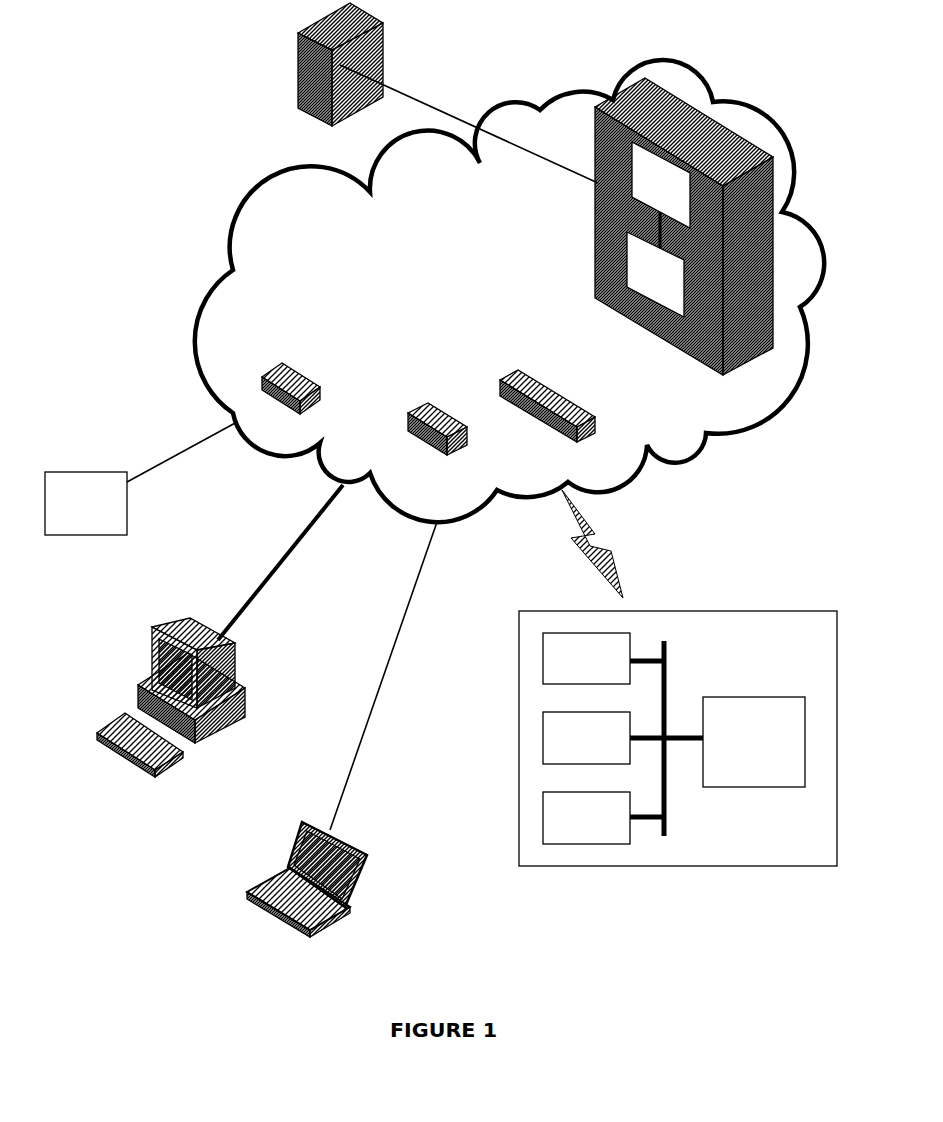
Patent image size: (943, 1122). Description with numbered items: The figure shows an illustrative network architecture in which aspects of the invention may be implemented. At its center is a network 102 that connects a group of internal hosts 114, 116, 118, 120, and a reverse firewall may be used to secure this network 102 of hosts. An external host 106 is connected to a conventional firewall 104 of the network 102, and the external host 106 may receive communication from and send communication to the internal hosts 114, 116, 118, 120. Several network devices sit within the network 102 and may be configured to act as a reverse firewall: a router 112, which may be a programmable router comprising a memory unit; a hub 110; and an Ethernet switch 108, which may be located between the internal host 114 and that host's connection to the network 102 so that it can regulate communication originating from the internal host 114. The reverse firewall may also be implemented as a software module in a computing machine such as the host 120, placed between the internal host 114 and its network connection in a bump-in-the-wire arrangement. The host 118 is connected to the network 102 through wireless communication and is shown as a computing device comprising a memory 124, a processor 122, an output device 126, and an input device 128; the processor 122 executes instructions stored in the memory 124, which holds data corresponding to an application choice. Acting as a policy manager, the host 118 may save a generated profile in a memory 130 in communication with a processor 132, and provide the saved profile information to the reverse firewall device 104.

The network 102 is at (317, 255).
The conventional firewall 104 is at (677, 226).
The external host 106 is at (370, 50).
The switch 108 is at (588, 407).
The hub 110 is at (458, 448).
The router 112 is at (270, 357).
The internal host 114 is at (222, 657).
The internal host 116 is at (327, 832).
The host 118 is at (637, 724).
The host 120 is at (128, 520).
The processor 122 is at (753, 695).
The memory 124 is at (565, 725).
The output device 126 is at (572, 645).
The input device 128 is at (565, 800).
The memory 130 is at (650, 168).
The processor 132 is at (645, 258).